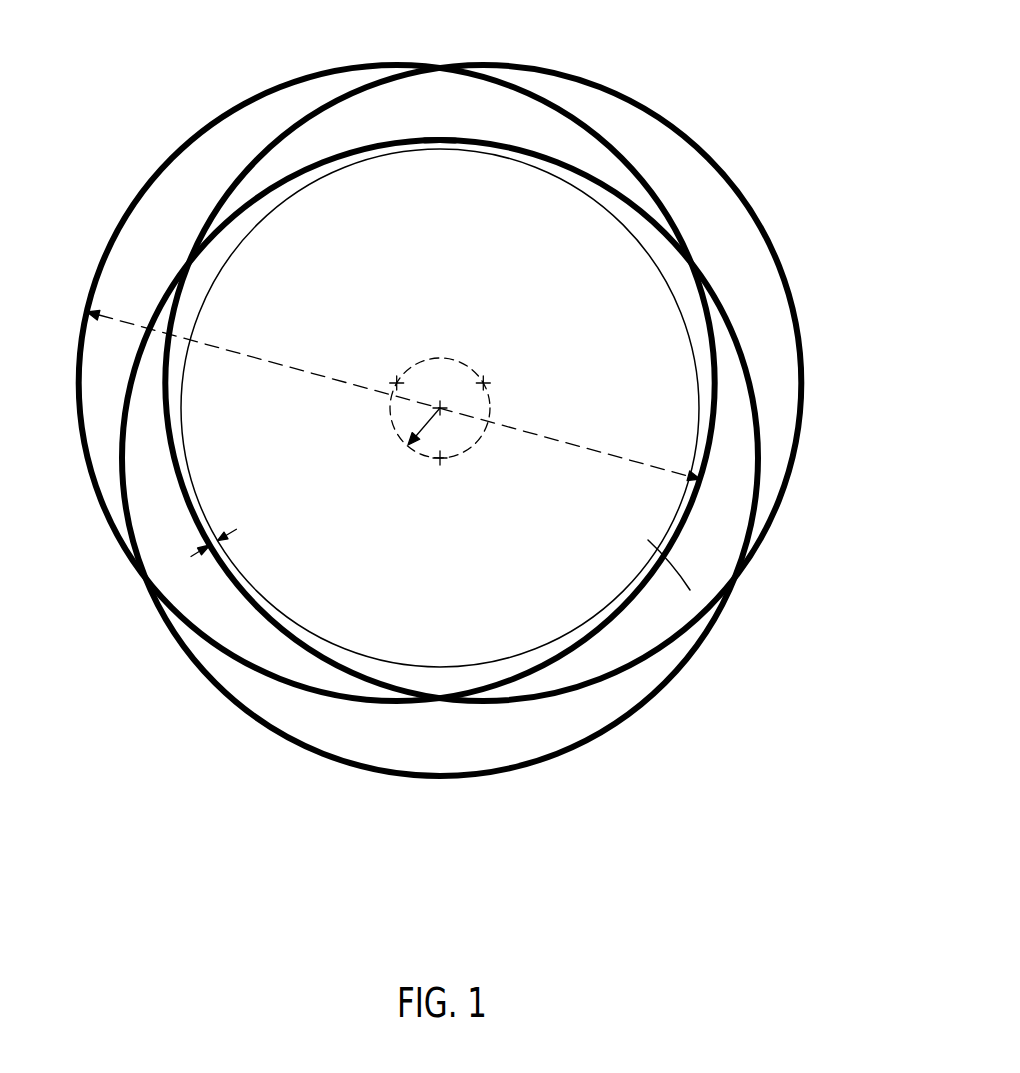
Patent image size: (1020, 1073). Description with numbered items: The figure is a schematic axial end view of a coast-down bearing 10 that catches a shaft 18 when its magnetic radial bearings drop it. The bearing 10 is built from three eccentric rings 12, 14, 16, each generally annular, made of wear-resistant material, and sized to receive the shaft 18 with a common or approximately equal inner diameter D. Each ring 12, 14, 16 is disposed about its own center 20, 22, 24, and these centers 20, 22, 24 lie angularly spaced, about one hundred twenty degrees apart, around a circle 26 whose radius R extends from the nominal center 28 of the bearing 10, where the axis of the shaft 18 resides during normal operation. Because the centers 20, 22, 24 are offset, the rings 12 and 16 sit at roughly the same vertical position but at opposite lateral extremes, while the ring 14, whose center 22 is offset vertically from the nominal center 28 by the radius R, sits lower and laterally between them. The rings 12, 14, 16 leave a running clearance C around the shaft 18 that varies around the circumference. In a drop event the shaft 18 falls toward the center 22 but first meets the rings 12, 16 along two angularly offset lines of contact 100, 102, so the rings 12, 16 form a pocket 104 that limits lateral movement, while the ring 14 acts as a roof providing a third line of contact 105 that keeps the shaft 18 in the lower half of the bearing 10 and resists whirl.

The coast-down bearing 10 is at (763, 55).
The eccentric ring 12 is at (740, 192).
The eccentric ring 14 is at (760, 487).
The eccentric ring 16 is at (637, 170).
The shaft 18 is at (655, 295).
The center 20 is at (484, 381).
The center 22 is at (443, 462).
The center 24 is at (397, 381).
The circle 26 is at (490, 402).
The nominal center 28 is at (447, 414).
The line of contact 100 is at (663, 563).
The line of contact 102 is at (207, 541).
The pocket 104 is at (451, 656).
The third line of contact 105 is at (440, 140).
The radius R is at (407, 443).
The inner diameter D is at (593, 449).
The running clearance C is at (223, 546).